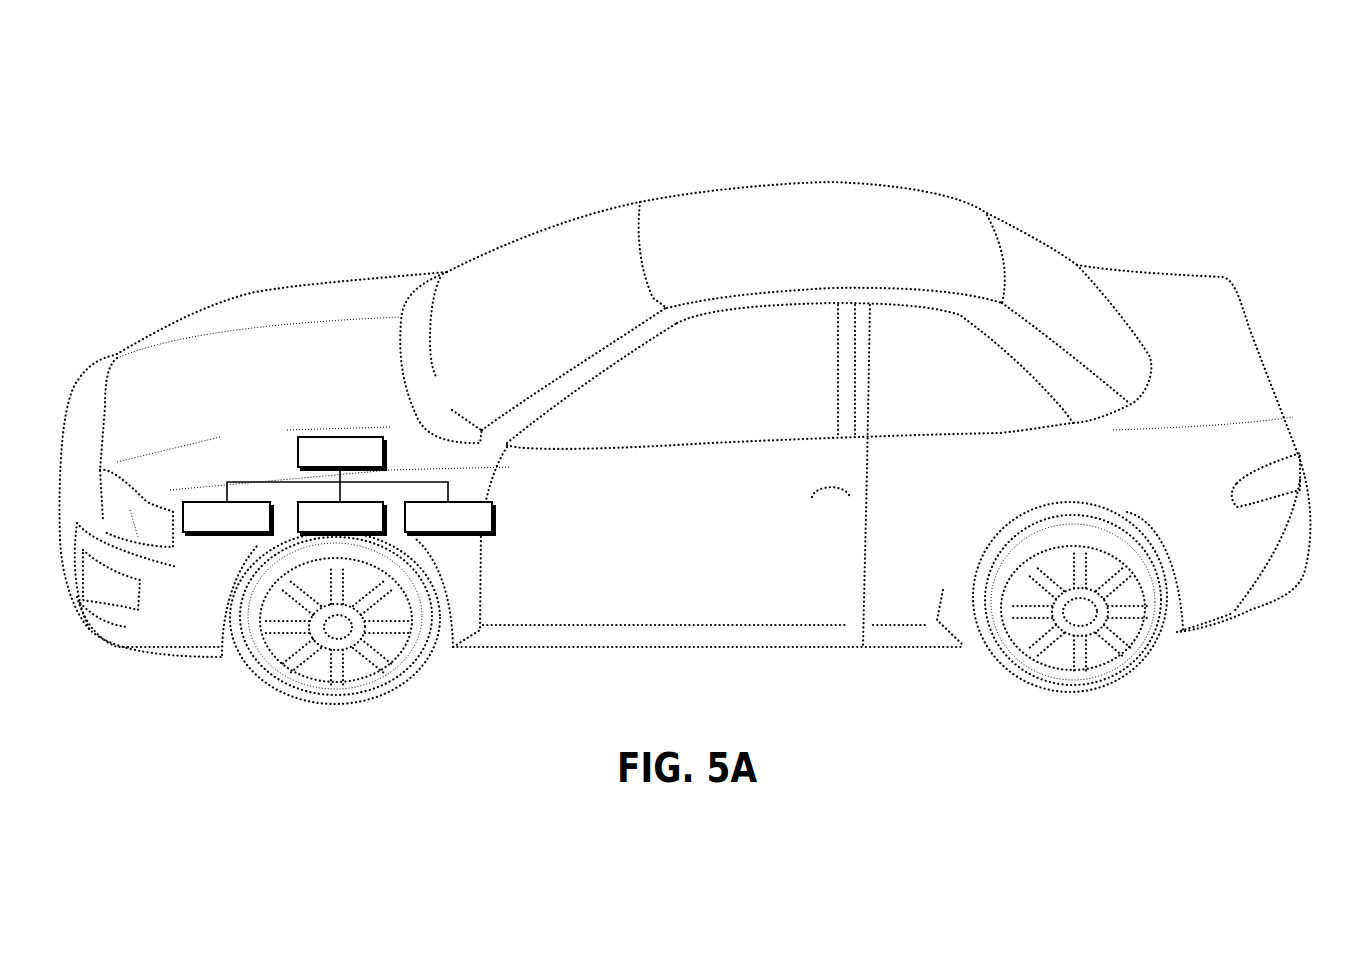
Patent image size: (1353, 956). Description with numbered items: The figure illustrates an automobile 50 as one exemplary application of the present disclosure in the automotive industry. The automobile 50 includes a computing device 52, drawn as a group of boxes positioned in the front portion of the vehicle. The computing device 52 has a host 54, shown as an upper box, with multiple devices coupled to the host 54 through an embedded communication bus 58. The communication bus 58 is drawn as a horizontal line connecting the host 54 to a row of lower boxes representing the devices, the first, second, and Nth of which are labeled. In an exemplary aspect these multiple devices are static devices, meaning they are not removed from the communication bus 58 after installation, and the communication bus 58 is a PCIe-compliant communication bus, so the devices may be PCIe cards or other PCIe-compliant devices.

The automobile 50 is at (963, 128).
The computing device 52 is at (386, 545).
The host 54 is at (298, 452).
The embedded communication bus 58 is at (397, 481).